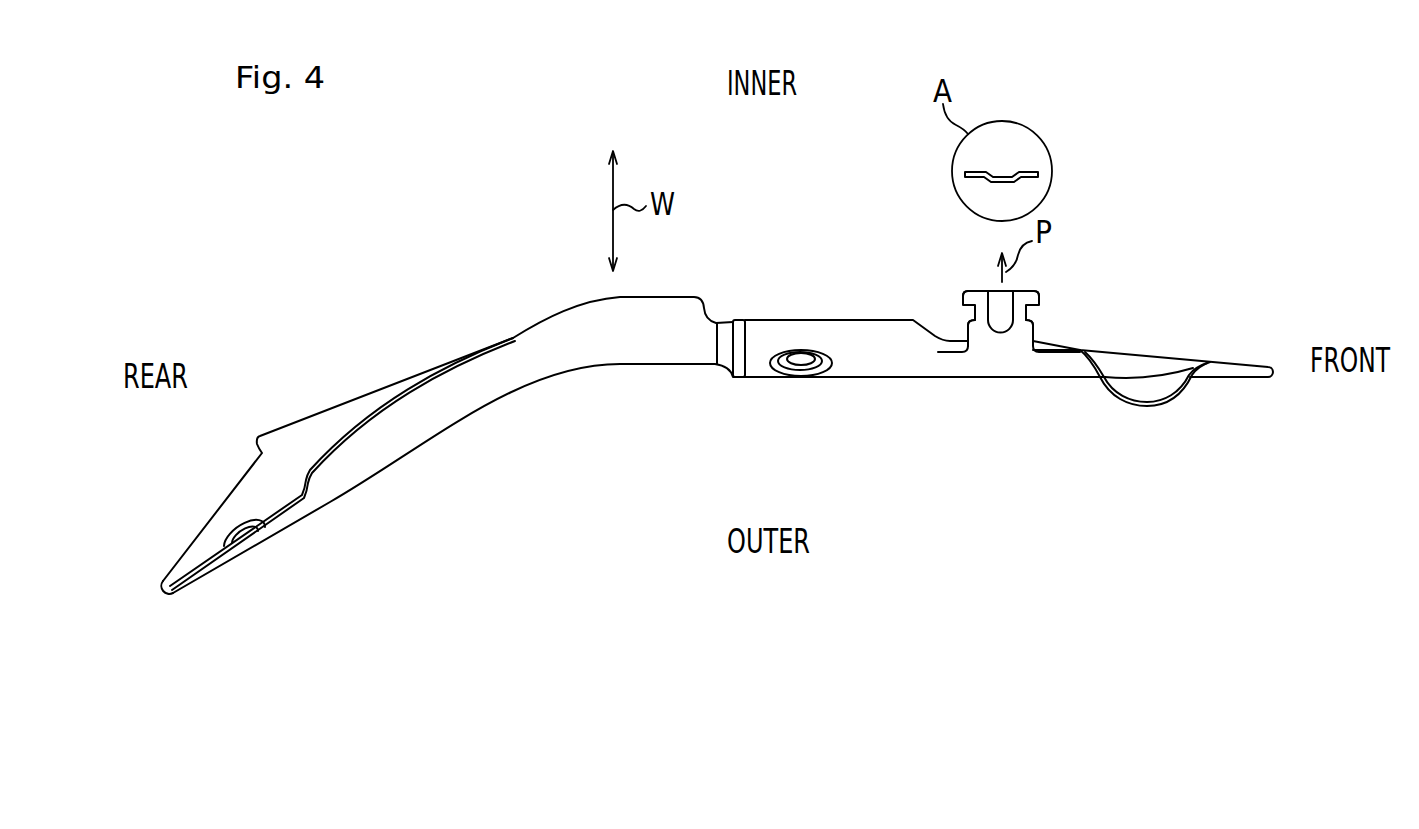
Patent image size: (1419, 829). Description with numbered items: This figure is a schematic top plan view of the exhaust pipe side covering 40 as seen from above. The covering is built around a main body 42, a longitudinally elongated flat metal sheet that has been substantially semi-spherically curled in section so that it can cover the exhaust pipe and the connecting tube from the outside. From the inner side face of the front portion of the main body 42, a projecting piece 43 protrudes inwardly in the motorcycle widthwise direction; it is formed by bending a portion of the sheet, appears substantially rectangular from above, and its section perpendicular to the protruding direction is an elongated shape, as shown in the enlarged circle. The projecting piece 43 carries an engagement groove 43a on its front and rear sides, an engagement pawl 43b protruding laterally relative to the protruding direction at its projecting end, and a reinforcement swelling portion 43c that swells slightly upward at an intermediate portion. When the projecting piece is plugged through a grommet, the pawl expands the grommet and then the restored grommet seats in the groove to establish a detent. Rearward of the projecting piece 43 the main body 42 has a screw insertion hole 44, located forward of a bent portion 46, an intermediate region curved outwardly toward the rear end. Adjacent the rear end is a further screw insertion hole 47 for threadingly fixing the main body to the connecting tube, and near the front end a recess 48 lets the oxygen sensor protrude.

The exhaust pipe side covering 40 is at (877, 380).
The main body 42 is at (785, 330).
The projecting piece 43 is at (1020, 291).
The engagement groove 43a is at (962, 315).
The engagement pawl 43b is at (965, 292).
The reinforcement swelling portion 43c is at (1002, 306).
The screw insertion hole 44 is at (800, 360).
The bent portion 46 is at (713, 346).
The screw insertion hole 47 is at (247, 520).
The recess 48 is at (1152, 386).